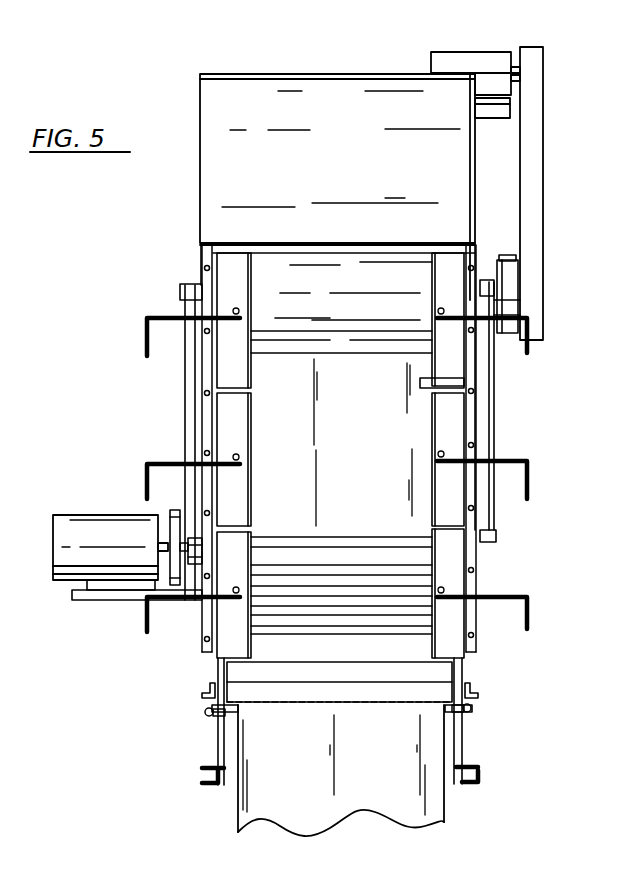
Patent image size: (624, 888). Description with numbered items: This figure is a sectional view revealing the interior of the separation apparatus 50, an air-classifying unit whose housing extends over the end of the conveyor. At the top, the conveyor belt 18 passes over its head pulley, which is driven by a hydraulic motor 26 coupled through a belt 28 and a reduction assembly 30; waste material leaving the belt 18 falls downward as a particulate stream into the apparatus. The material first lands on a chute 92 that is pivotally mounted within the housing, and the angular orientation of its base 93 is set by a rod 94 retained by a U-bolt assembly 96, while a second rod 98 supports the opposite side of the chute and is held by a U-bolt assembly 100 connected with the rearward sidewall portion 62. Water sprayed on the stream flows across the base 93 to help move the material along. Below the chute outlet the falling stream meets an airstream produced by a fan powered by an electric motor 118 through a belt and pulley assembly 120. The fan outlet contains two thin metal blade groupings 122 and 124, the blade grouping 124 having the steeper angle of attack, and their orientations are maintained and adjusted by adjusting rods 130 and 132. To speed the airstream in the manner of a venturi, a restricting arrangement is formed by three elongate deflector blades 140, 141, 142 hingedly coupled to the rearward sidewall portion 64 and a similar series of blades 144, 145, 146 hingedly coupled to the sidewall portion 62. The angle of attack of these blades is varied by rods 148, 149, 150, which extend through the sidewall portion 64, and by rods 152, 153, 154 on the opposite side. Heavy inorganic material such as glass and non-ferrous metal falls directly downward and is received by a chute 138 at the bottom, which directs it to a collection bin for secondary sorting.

The separation apparatus 50 is at (183, 73).
The hydraulic motor 26 is at (470, 60).
The belt 28 is at (532, 148).
The reduction assembly 30 is at (508, 273).
The belt 18 is at (320, 272).
The base 93 is at (356, 429).
The deflector blade 140 is at (444, 275).
The deflector blade 141 is at (442, 432).
The deflector blade 142 is at (436, 540).
The deflector blade 144 is at (240, 370).
The deflector blade 145 is at (234, 431).
The deflector blade 146 is at (240, 546).
The rearward sidewall portion 62 is at (208, 414).
The rearward sidewall portion 64 is at (470, 413).
The chute 92 is at (418, 384).
The rod 152 is at (143, 342).
The rod 153 is at (143, 466).
The rod 154 is at (143, 628).
The rod 148 is at (531, 350).
The rod 149 is at (531, 466).
The rod 150 is at (531, 613).
The electric motor 118 is at (82, 527).
The belt and pulley assembly 120 is at (176, 514).
The blade grouping 124 is at (338, 568).
The blade grouping 122 is at (333, 587).
The U-bolt assembly 100 is at (205, 712).
The U-bolt assembly 96 is at (472, 709).
The rod 98 is at (203, 768).
The adjusting rod 130 is at (203, 783).
The rod 94 is at (470, 768).
The adjusting rod 132 is at (479, 784).
The chute 138 is at (372, 792).